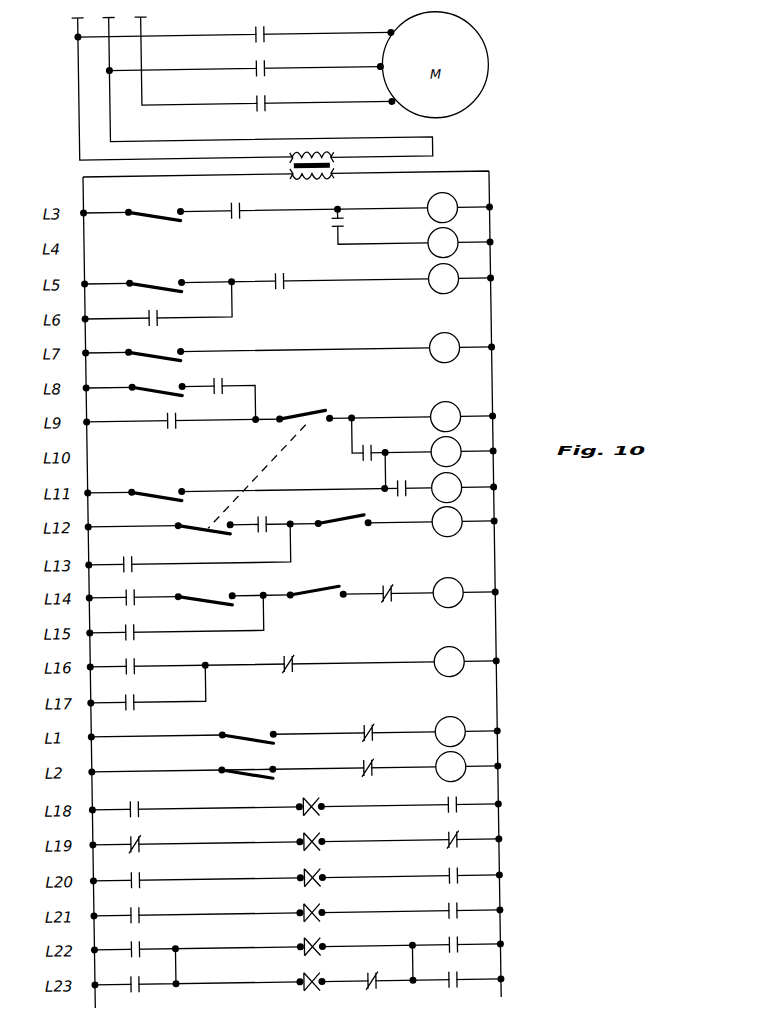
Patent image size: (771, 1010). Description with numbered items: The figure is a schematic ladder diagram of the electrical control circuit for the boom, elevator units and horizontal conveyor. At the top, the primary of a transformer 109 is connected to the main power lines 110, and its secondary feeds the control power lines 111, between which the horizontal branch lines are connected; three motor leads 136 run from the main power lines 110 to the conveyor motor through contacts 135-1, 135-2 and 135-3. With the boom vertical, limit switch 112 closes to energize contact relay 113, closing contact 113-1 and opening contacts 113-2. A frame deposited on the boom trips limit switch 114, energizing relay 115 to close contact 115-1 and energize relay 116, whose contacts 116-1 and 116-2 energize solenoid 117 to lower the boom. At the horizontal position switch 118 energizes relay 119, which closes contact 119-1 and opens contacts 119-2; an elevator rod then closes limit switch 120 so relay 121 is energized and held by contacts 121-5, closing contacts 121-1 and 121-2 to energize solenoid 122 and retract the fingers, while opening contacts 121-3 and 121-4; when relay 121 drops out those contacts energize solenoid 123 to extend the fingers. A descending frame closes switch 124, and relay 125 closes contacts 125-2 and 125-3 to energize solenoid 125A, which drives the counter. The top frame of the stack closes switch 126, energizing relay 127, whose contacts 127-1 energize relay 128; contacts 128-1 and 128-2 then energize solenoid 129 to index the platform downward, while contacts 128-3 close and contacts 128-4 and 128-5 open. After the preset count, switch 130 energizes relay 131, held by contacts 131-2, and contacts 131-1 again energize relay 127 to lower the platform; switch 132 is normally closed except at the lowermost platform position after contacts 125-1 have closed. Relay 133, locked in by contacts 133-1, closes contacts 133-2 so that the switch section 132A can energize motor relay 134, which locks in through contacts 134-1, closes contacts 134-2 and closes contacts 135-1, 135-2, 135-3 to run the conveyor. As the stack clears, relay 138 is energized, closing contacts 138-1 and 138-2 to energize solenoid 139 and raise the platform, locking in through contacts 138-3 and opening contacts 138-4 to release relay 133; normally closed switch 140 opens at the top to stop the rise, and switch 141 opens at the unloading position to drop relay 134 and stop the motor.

The transformer 109 is at (318, 188).
The main power lines 110 is at (143, 106).
The control power lines 111 is at (83, 184).
The limit switch 112 is at (247, 729).
The contact relay 113 is at (450, 731).
The contact 113-1 is at (239, 203).
The contacts 113-2 is at (371, 761).
The limit switch 114 is at (154, 207).
The relay 115 is at (442, 207).
The contact 115-1 is at (380, 226).
The relay 116 is at (443, 242).
The contacts 116-1 is at (140, 803).
The contacts 116-2 is at (460, 797).
The solenoid 117 is at (313, 798).
The switch 118 is at (247, 764).
The relay 119 is at (451, 766).
The contact 119-1 is at (284, 274).
The contacts 119-2 is at (372, 725).
The limit switch 120 is at (155, 277).
The relay 121 is at (443, 278).
The contacts 121-1 is at (141, 873).
The contacts 121-2 is at (459, 867).
The contacts 121-3 is at (141, 838).
The contacts 121-4 is at (459, 832).
The contacts 121-5 is at (156, 312).
The solenoid 122 is at (324, 870).
The solenoid 123 is at (323, 834).
The switch 124 is at (154, 347).
The relay 125 is at (444, 347).
The contacts 125-1 is at (222, 379).
The contacts 125-2 is at (142, 908).
The contacts 125-3 is at (460, 902).
The solenoid 125A is at (328, 905).
The switch 126 is at (156, 487).
The relay 127 is at (446, 451).
The contacts 127-1 is at (411, 480).
The relay 128 is at (446, 487).
The contacts 128-1 is at (142, 942).
The contacts 128-2 is at (460, 937).
The contacts 128-3 is at (138, 660).
The contacts 128-4 is at (389, 585).
The contacts 128-5 is at (375, 973).
The solenoid 129 is at (325, 939).
The switch 130 is at (156, 382).
The relay 131 is at (445, 416).
The contacts 131-1 is at (375, 444).
The contacts 131-2 is at (177, 413).
The switch 132 is at (304, 407).
The selector switch ganged section 132A is at (204, 535).
The relay 133 is at (449, 661).
The contacts 133-1 is at (138, 696).
The contacts 133-2 is at (267, 517).
The motor relay 134 is at (447, 521).
The contacts 134-1 is at (136, 557).
The contacts 134-2 is at (137, 591).
The contact 135-1 is at (264, 26).
The contact 135-2 is at (264, 61).
The contact 135-3 is at (265, 96).
The motor leads 136 is at (181, 37).
The relay 138 is at (448, 592).
The contacts 138-1 is at (143, 977).
The contacts 138-2 is at (461, 971).
The contacts 138-3 is at (137, 626).
The contacts 138-4 is at (291, 657).
The solenoid 139 is at (324, 974).
The switch 140 is at (316, 583).
The switch 141 is at (342, 512).